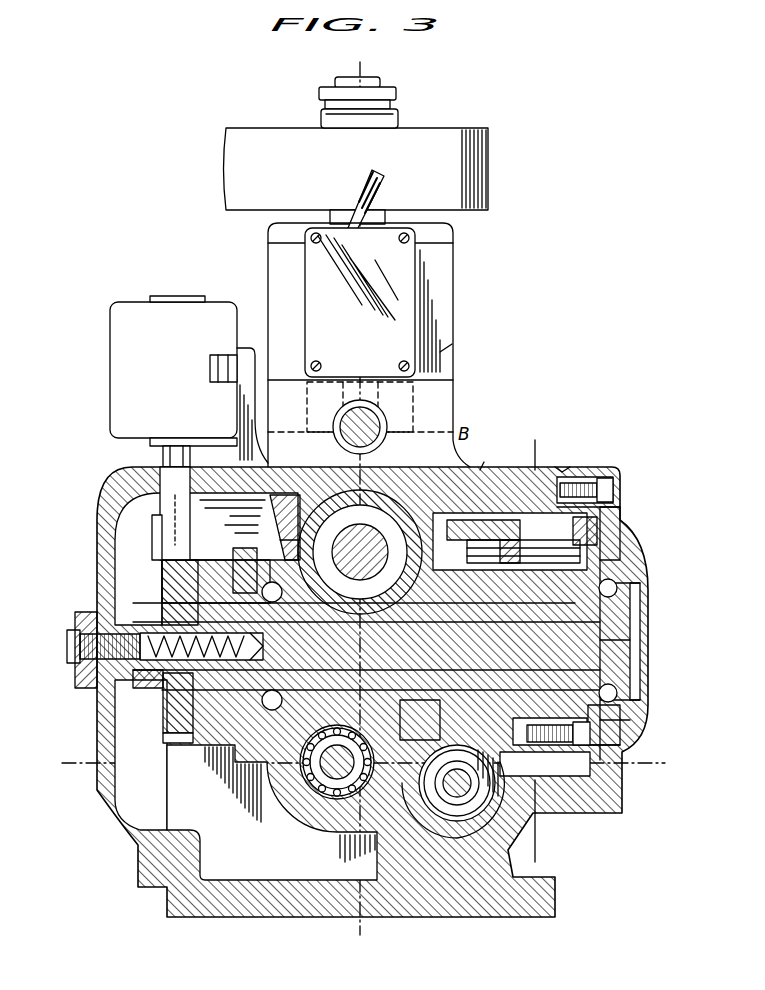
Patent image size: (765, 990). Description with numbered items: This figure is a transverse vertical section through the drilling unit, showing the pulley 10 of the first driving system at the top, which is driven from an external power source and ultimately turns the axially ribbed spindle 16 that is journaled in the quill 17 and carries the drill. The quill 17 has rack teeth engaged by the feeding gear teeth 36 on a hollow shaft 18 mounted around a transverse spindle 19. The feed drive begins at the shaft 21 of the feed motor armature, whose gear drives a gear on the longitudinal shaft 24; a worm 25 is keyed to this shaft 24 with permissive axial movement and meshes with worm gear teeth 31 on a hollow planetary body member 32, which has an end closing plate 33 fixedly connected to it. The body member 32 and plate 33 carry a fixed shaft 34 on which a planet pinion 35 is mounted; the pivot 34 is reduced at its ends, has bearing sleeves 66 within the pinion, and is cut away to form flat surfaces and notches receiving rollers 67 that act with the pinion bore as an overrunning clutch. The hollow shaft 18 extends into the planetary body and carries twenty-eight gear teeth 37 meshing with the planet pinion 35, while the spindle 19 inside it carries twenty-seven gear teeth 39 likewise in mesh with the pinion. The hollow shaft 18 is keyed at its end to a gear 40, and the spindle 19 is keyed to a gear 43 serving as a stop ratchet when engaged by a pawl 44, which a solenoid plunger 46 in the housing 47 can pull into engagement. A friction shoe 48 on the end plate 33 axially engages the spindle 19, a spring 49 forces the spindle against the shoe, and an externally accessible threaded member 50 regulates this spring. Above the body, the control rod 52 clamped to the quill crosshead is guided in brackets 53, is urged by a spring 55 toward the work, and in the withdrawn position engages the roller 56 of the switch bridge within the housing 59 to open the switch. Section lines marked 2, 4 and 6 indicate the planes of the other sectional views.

The section line 2- 2 is at (382, 57).
The section line 4- 4 is at (77, 750).
The section line 6- 6 is at (524, 452).
The pulley 10 is at (492, 180).
The spindle 16 is at (285, 523).
The quill 17 is at (292, 531).
The hollow shaft 18 is at (270, 760).
The spindle 19 is at (415, 702).
The shaft 21 is at (335, 782).
The longitudinal shaft 24 is at (440, 808).
The worm 25 is at (458, 800).
The worm gear teeth 31 is at (478, 468).
The planetary body member 32 is at (522, 742).
The end closing plate 33 is at (622, 722).
The fixed shaft 34 is at (565, 468).
The planet pinion 35 is at (620, 500).
The feeding gear teeth 36 is at (282, 822).
The gear teeth 37 is at (612, 628).
The gear teeth 39 is at (636, 548).
The gear 40 is at (218, 709).
The gear 43 is at (177, 697).
The pawl 44 is at (160, 542).
The plunger 46 is at (160, 457).
The housing 47 is at (112, 342).
The friction shoe 48 is at (640, 672).
The spring 49 is at (106, 680).
The threaded member 50 is at (72, 643).
The control rod 52 is at (372, 424).
The brackets 53 is at (292, 412).
The spring 55 is at (380, 412).
The roller 56 is at (456, 350).
The housing 59 is at (400, 297).
The bearing sleeves 66 is at (496, 466).
The rollers 67 is at (516, 470).